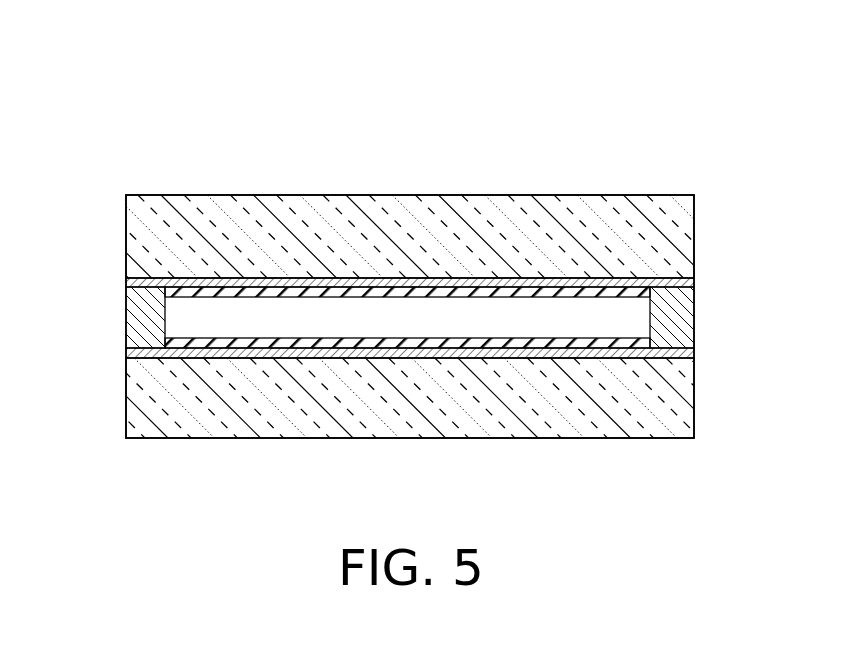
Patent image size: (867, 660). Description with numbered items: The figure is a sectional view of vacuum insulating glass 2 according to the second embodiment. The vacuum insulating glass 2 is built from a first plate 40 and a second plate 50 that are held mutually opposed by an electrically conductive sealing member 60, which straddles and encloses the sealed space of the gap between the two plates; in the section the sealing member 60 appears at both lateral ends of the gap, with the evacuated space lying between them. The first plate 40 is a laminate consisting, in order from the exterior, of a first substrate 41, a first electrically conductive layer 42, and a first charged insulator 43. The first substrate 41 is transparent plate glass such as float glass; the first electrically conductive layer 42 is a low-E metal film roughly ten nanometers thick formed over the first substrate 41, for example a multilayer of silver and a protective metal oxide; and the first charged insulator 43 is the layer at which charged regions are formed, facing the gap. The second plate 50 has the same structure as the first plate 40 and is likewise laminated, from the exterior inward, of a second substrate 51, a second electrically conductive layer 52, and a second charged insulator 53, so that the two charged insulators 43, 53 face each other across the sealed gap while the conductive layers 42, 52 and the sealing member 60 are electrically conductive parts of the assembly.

The vacuum insulating glass 2 is at (450, 173).
The first plate 40 is at (415, 223).
The first substrate 41 is at (695, 245).
The first electrically conductive layer 42 is at (695, 283).
The first charged insulator 43 is at (615, 297).
The second plate 50 is at (429, 410).
The second substrate 51 is at (695, 383).
The second electrically conductive layer 52 is at (695, 352).
The second charged insulator 53 is at (620, 338).
The electrically conductive sealing member 60 is at (126, 325).